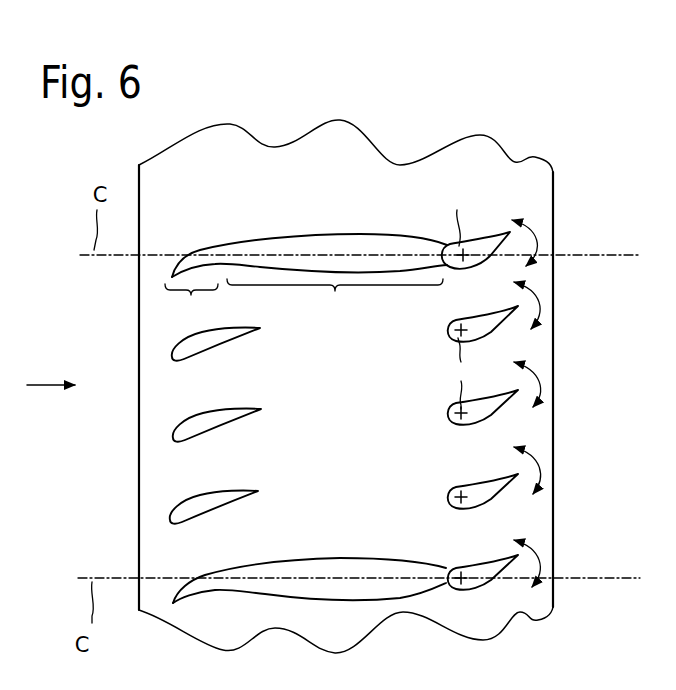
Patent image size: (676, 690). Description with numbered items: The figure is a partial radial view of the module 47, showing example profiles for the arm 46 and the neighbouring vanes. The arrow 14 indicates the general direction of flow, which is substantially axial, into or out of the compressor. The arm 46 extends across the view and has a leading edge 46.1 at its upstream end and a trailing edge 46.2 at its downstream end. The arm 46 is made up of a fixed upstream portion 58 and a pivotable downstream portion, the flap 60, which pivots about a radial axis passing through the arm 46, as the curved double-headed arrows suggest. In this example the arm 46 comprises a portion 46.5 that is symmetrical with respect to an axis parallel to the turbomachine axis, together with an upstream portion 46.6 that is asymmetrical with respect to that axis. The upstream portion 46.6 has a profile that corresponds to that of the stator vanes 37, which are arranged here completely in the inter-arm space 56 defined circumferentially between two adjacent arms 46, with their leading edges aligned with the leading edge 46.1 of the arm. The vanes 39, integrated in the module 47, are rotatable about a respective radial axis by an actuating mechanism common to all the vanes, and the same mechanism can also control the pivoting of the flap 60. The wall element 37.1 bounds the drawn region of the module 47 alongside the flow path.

The arrow 14 is at (73, 393).
The stator vanes 37 is at (212, 337).
The casing wall 37.1 is at (157, 447).
The vanes 39 is at (445, 332).
The arm 46 is at (353, 207).
The leading edge 46.1 is at (173, 277).
The trailing edge 46.2 is at (533, 226).
The portion of the arm 46.5 is at (335, 303).
The upstream portion 46.6 is at (191, 305).
The module 47 is at (343, 82).
The inter-arm space 56 is at (317, 427).
The upstream portion 58 is at (333, 247).
The flap 60 is at (498, 236).